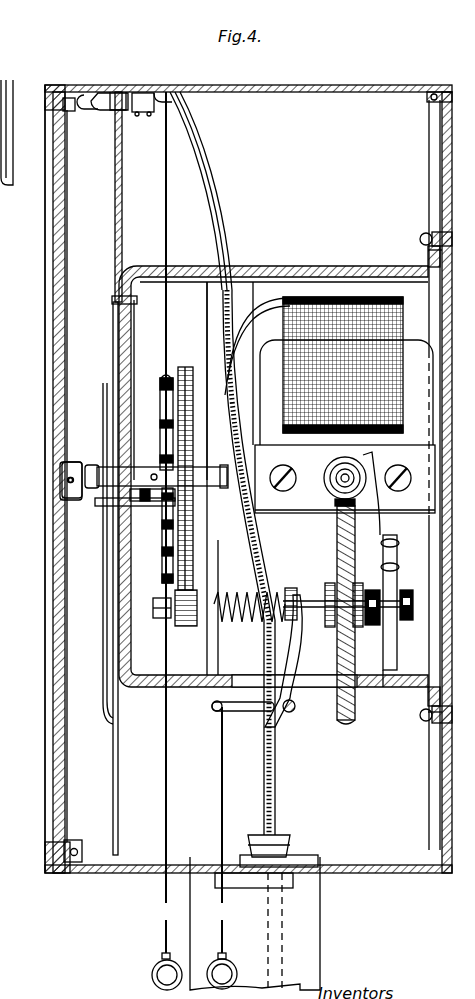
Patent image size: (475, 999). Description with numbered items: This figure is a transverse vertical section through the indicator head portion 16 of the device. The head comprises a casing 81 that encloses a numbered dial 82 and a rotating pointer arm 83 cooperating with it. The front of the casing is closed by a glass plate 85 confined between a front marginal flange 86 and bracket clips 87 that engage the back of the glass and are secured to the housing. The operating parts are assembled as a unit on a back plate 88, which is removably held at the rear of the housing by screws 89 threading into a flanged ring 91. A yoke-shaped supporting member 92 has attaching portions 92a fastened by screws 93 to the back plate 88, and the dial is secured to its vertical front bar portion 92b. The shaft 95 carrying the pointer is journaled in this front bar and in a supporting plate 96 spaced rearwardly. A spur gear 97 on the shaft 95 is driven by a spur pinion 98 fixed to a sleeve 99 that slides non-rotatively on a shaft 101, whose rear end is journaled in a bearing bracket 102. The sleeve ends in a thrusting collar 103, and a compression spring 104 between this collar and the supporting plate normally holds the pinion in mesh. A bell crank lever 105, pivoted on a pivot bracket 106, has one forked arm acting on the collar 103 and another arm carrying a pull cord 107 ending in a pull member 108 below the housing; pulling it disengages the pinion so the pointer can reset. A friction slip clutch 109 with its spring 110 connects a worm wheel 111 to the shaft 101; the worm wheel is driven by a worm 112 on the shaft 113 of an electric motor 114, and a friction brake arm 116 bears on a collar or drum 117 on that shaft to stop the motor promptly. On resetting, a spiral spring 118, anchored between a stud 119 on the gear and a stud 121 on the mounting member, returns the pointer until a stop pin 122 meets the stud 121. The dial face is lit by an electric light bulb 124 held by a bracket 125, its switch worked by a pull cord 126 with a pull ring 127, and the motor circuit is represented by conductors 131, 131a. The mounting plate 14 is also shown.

The mounting plate 14 is at (322, 956).
The indicator head portion 16 is at (40, 426).
The casing 81 is at (2, 66).
The numbered dial 82 is at (114, 218).
The pointer arm 83 is at (102, 704).
The glass plate 85 is at (32, 204).
The front marginal flange 86 is at (5, 104).
The bracket clips 87 is at (68, 112).
The back plate 88 is at (440, 142).
The screws 89 is at (447, 88).
The flanged ring 91 is at (428, 90).
The yoke-shaped supporting member 92 is at (290, 272).
The attaching portions 92a is at (432, 240).
The front bar portion 92b is at (120, 352).
The screws 93 is at (428, 241).
The shaft 95 is at (100, 472).
The supporting plate 96 is at (208, 345).
The spur gear 97 is at (194, 546).
The spur pinion 98 is at (186, 624).
The sleeve 99 is at (162, 618).
The shaft 101 is at (320, 600).
The bearing bracket 102 is at (388, 688).
The thrusting collar 103 is at (292, 587).
The compression spring 104 is at (245, 592).
The bell crank lever 105 is at (296, 711).
The pivot bracket 106 is at (250, 713).
The pull cord 107 is at (220, 794).
The pull member 108 is at (246, 950).
The friction slip clutch 109 is at (330, 628).
The spring 110 is at (368, 626).
The worm wheel 111 is at (348, 726).
The worm 112 is at (323, 510).
The motor shaft 113 is at (340, 480).
The electric motor 114 is at (333, 325).
The friction brake arm 116 is at (370, 468).
The collar or drum 117 is at (330, 468).
The spiral spring 118 is at (160, 408).
The stud 119 is at (176, 384).
The stud 121 is at (140, 520).
The stop pin 122 is at (148, 501).
The electric light bulb 124 is at (103, 98).
The bracket 125 is at (142, 108).
The pull cord 126 is at (164, 902).
The pull ring 127 is at (150, 977).
The conductor 131 is at (222, 280).
The conductor 131a is at (231, 280).